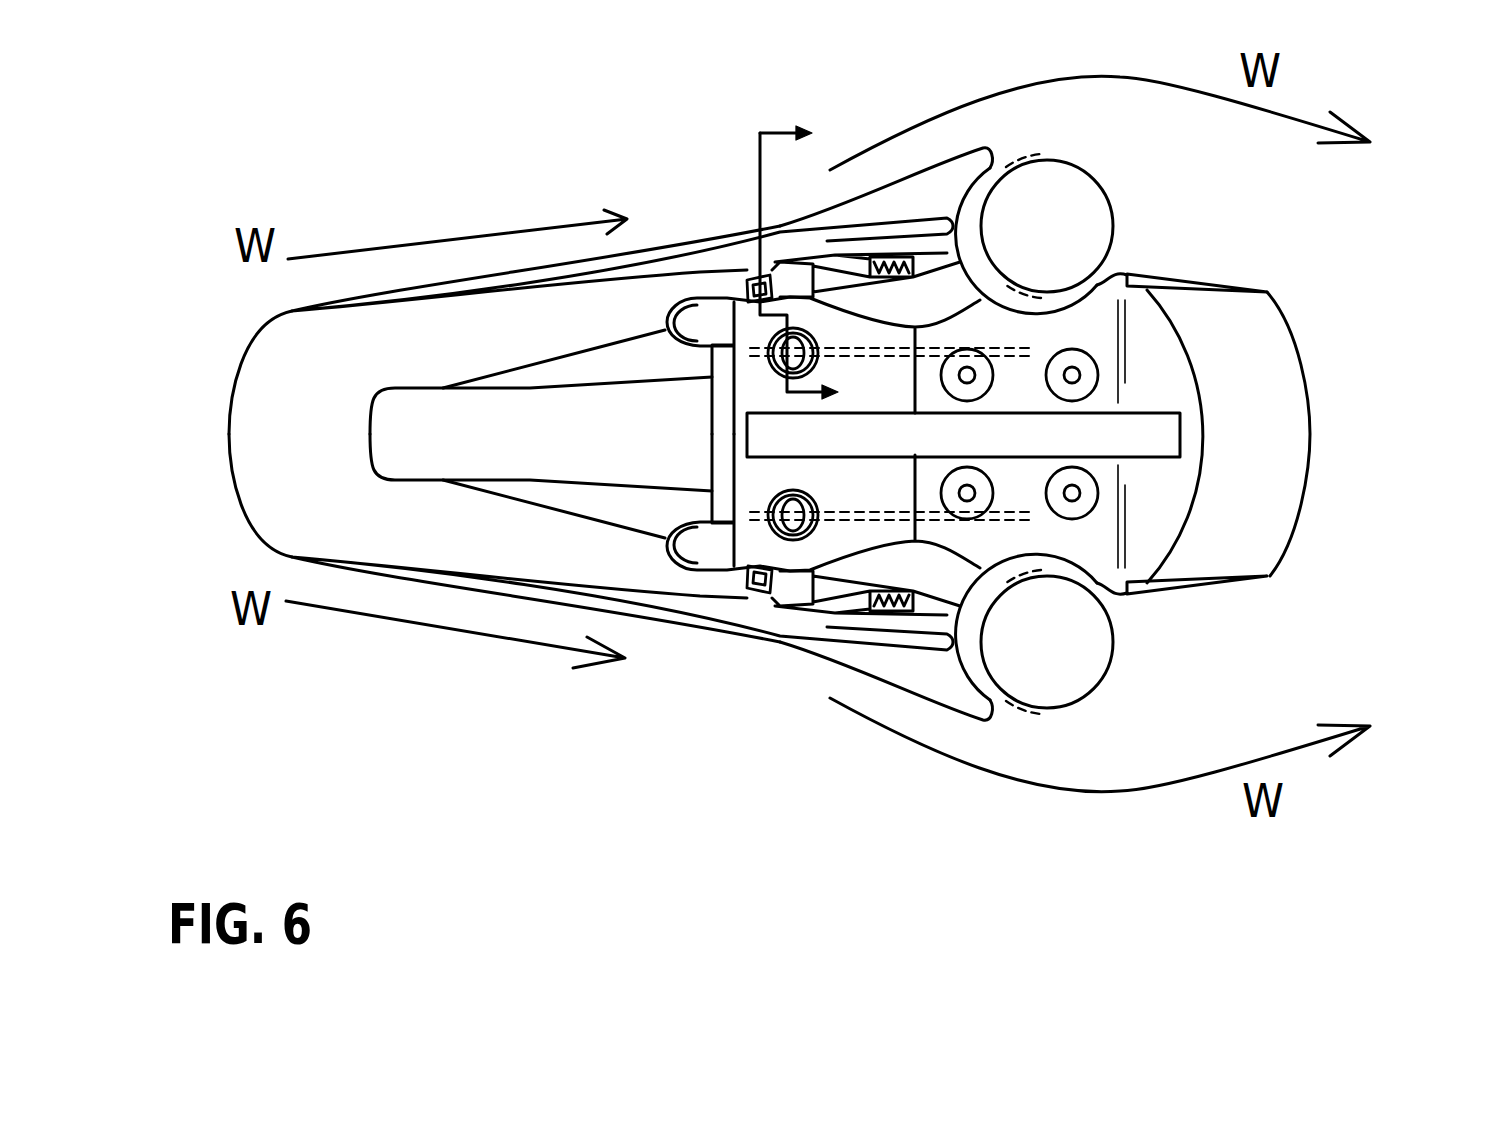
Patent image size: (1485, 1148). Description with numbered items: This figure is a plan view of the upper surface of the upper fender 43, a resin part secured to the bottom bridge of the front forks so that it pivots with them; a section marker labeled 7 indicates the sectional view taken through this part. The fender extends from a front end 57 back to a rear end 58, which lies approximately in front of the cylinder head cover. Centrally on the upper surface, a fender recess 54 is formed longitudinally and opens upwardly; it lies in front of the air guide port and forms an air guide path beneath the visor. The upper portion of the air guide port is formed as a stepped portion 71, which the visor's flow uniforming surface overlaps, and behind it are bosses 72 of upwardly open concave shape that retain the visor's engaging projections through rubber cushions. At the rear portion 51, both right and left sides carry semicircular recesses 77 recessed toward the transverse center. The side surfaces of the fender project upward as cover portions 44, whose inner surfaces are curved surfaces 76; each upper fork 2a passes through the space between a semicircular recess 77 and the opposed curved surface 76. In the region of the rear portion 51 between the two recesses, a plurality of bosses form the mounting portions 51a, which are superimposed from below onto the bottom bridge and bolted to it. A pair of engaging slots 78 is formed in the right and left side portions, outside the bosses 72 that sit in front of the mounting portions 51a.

The upper fender 43 is at (236, 322).
The cover portions 44 is at (944, 160).
The upper fork 2a is at (1103, 180).
The curved surfaces 76 is at (1047, 160).
The rear portion 51 is at (1153, 348).
The mounting portions 51a is at (1073, 370).
The fender recess 54 is at (400, 420).
The front end 57 is at (230, 430).
The rear end 58 is at (1313, 420).
The stepped portion 71 is at (767, 473).
The bosses 72 is at (742, 352).
The semicircular recesses 77 is at (1110, 280).
The engaging slots 78 is at (757, 278).
The section line VII-VII 7 is at (812, 252).